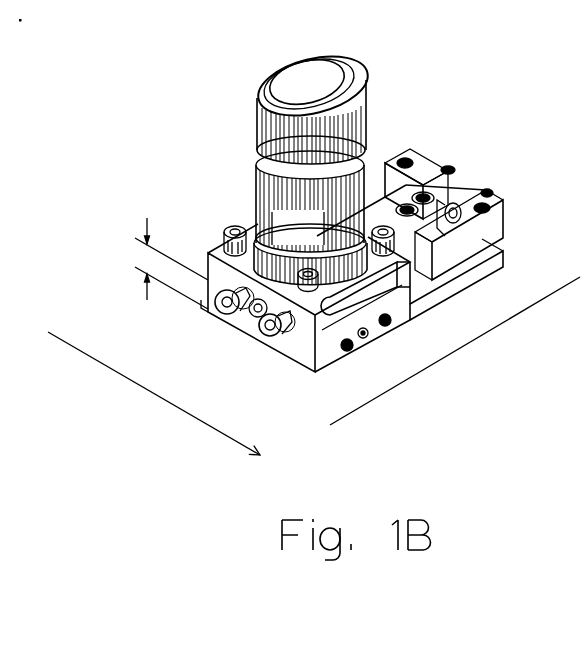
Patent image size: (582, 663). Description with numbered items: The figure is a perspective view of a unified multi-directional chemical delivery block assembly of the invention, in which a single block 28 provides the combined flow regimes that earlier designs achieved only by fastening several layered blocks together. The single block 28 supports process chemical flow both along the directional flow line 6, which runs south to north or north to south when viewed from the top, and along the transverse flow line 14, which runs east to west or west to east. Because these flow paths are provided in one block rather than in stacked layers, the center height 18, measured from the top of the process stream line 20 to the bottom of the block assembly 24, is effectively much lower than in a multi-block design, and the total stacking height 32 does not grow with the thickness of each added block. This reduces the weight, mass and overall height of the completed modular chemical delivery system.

The directional flow line 6 is at (477, 347).
The transverse flow line 14 is at (140, 388).
The center height 18 is at (95, 227).
The process stream line 20 is at (253, 320).
The block assembly 24 is at (207, 313).
The single block 28 is at (418, 305).
The total stacking height 32 is at (188, 165).